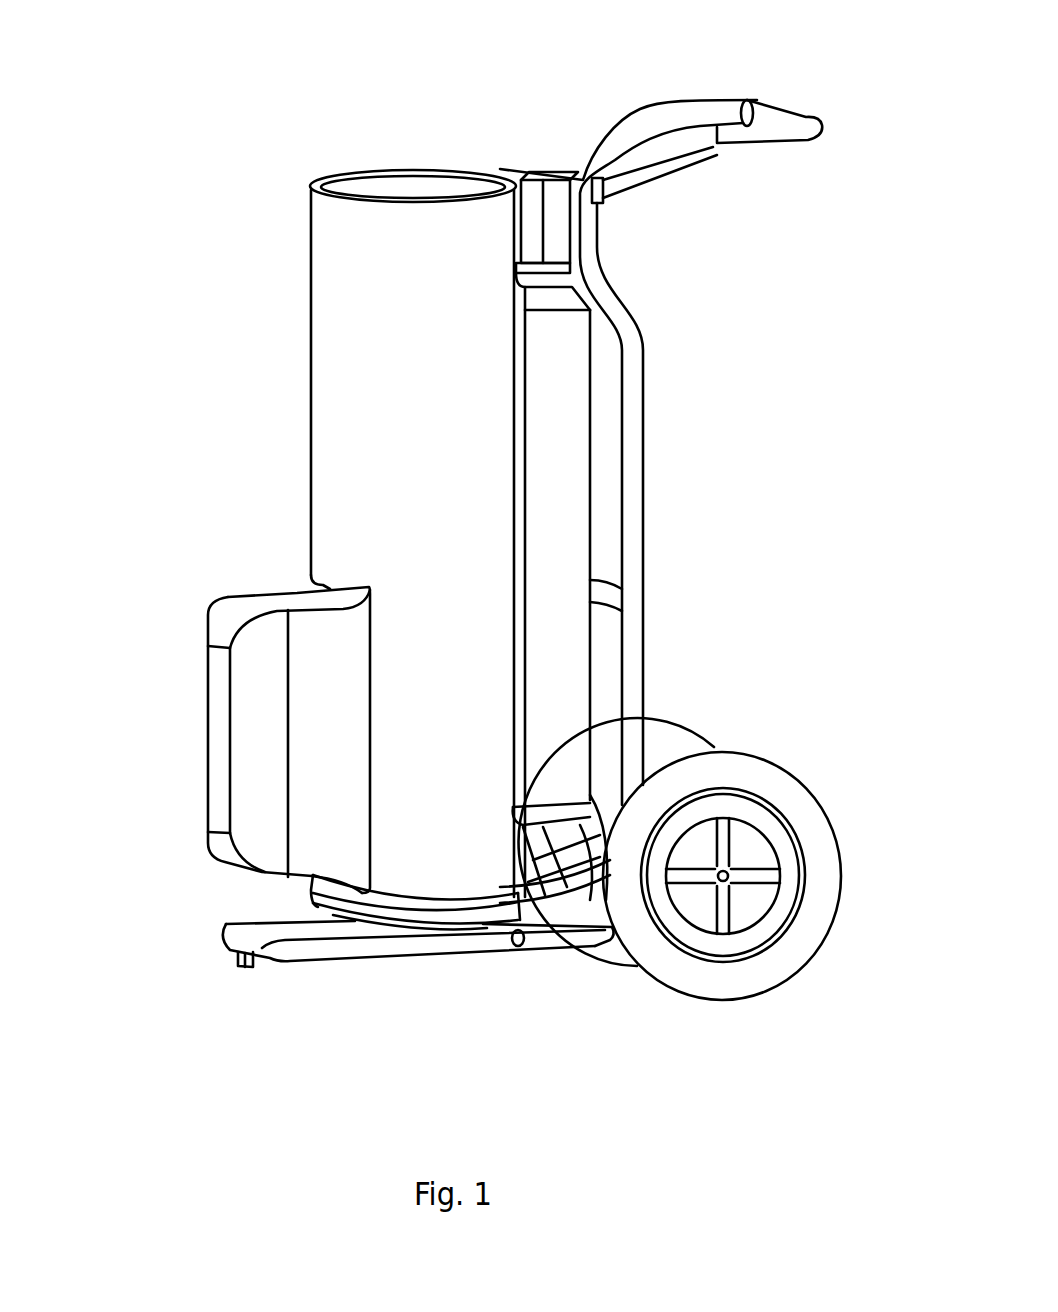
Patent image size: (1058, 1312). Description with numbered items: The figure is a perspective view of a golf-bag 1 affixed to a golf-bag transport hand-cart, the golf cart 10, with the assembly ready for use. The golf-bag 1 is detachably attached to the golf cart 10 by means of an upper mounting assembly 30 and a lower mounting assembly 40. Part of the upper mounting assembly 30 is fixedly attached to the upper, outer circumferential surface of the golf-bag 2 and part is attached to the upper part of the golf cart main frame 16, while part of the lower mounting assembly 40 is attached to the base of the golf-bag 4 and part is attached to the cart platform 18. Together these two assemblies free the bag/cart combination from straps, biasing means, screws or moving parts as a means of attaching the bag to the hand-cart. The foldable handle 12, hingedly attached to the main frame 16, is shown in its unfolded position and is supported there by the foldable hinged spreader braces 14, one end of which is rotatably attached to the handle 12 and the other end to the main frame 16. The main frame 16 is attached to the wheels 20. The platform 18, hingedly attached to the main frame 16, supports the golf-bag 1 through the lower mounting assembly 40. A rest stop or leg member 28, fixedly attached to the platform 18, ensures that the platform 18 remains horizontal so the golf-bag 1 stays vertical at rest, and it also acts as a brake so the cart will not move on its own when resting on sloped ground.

The golf-bag 1 is at (355, 390).
The upper, outer circumferential surface of golf-bag 2 is at (380, 197).
The base component of golf-bag 4 is at (310, 905).
The golf cart 10 is at (763, 392).
The foldable handle 12 is at (748, 112).
The foldable hinged spreader braces 14 is at (667, 198).
The main frame of golf cart 16 is at (633, 510).
The platform part of golf cart 18 is at (395, 942).
The wheels of golf cart 20 is at (713, 777).
The rest stop or leg member 28 is at (237, 962).
The upper mounting assembly 30 is at (555, 207).
The lower mounting assembly 40 is at (430, 932).